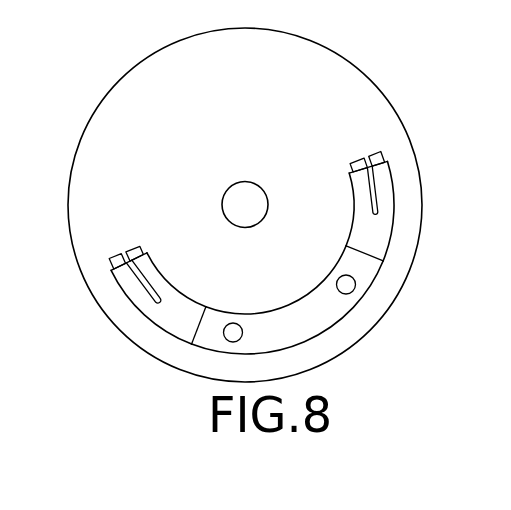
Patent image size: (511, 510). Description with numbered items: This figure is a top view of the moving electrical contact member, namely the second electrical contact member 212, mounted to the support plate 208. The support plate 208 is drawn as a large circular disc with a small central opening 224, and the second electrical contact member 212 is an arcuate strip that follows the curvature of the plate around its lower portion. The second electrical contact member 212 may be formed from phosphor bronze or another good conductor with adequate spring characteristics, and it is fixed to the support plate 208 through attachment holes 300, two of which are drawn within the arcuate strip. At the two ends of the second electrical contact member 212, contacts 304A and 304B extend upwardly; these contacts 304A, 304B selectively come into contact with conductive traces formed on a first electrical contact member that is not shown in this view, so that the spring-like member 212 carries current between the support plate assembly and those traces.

The support plate 208 is at (113, 110).
The central hub opening 224 is at (252, 182).
The second electrical contact member 212 is at (163, 317).
The contact 304A is at (392, 160).
The contact 304B is at (125, 280).
The attachment holes 300 is at (223, 335).